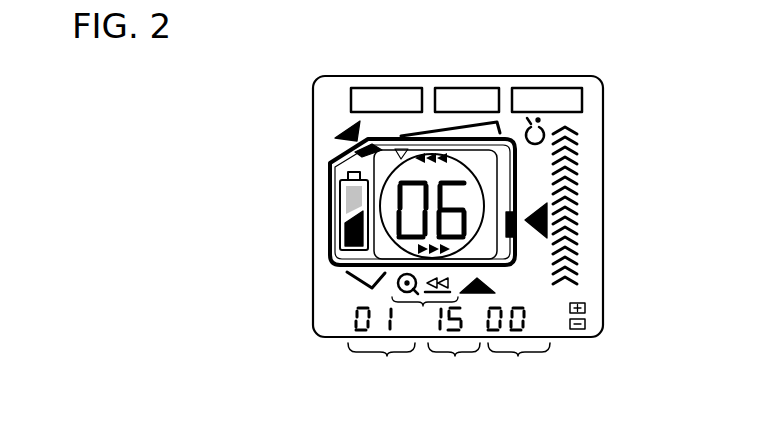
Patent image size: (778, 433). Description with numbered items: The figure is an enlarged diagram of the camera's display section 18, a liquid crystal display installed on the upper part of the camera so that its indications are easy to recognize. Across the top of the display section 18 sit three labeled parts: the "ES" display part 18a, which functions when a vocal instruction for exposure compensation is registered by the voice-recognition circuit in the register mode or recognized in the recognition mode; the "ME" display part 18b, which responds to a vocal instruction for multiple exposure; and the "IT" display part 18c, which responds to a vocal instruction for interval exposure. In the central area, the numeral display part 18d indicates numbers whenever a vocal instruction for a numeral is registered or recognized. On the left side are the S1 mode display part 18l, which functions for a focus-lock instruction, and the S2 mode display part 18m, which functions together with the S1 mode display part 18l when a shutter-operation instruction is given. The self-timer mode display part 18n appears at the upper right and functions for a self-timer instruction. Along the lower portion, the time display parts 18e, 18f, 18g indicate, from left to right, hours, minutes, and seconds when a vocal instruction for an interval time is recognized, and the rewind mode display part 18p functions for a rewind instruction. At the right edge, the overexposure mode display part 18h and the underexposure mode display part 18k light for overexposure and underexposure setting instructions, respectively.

The display section 18 is at (300, 118).
The "ES" display part 18a is at (390, 87).
The "ME" display part 18b is at (467, 87).
The "IT" display part 18c is at (548, 87).
The S1 mode display part 18l is at (335, 137).
The S2 mode display part 18m is at (338, 148).
The self-timer mode display part 18n is at (548, 123).
The numeral display part 18d is at (467, 197).
The overexposure mode display part 18h is at (585, 307).
The underexposure mode display part 18k is at (585, 324).
The hours time display part 18e is at (381, 348).
The minutes time display part 18f is at (454, 348).
The seconds time display part 18g is at (519, 348).
The rewind mode display part 18p is at (422, 304).